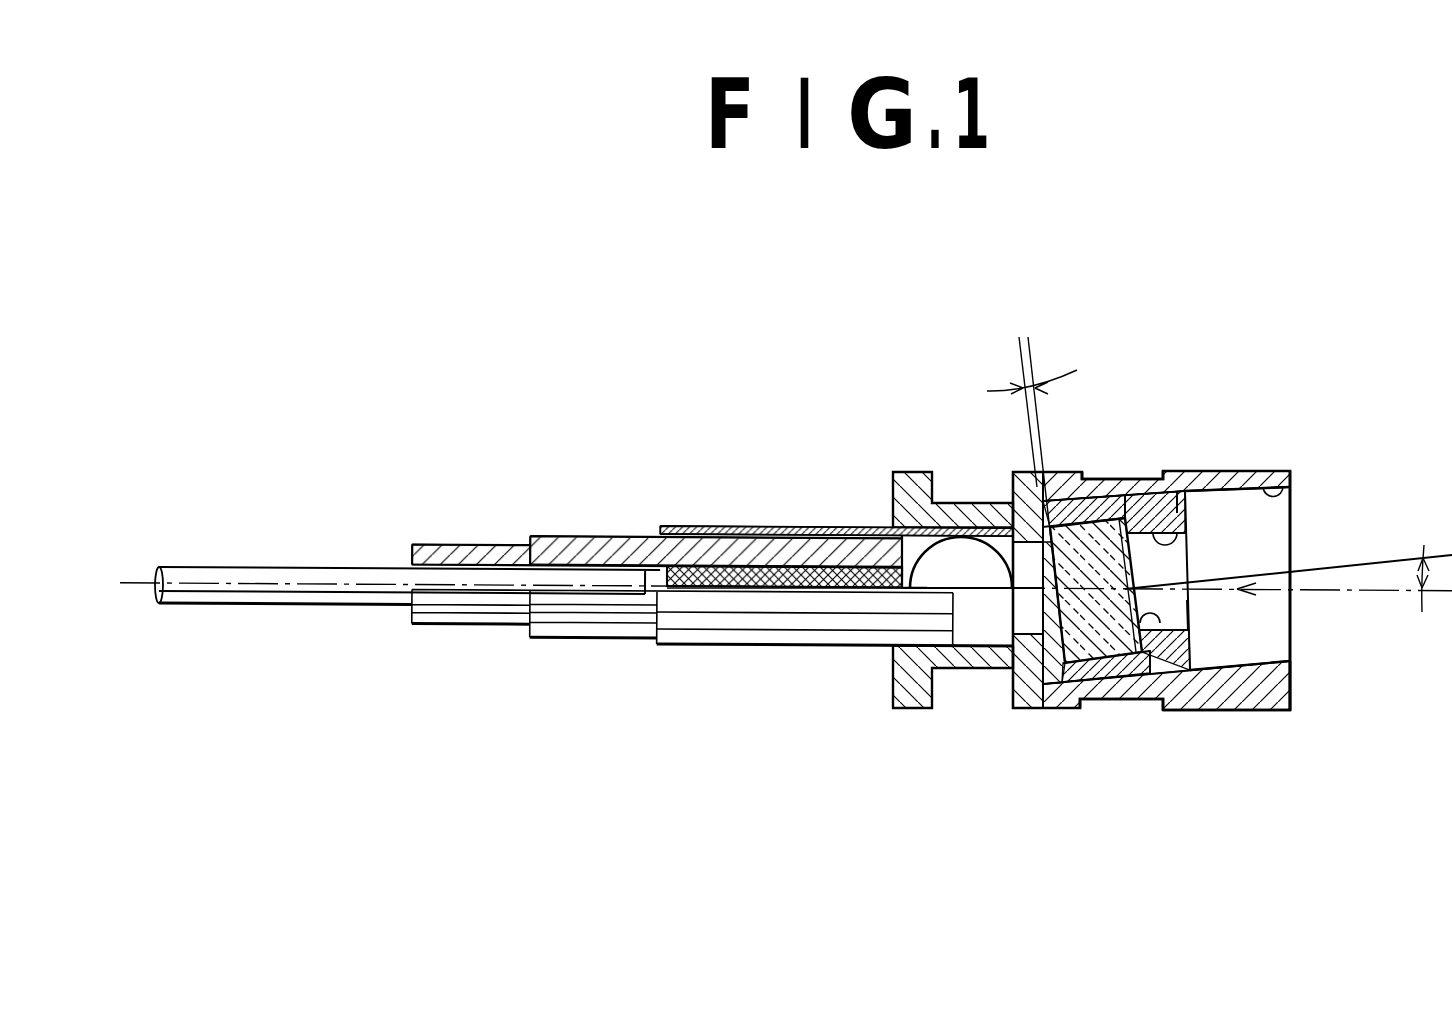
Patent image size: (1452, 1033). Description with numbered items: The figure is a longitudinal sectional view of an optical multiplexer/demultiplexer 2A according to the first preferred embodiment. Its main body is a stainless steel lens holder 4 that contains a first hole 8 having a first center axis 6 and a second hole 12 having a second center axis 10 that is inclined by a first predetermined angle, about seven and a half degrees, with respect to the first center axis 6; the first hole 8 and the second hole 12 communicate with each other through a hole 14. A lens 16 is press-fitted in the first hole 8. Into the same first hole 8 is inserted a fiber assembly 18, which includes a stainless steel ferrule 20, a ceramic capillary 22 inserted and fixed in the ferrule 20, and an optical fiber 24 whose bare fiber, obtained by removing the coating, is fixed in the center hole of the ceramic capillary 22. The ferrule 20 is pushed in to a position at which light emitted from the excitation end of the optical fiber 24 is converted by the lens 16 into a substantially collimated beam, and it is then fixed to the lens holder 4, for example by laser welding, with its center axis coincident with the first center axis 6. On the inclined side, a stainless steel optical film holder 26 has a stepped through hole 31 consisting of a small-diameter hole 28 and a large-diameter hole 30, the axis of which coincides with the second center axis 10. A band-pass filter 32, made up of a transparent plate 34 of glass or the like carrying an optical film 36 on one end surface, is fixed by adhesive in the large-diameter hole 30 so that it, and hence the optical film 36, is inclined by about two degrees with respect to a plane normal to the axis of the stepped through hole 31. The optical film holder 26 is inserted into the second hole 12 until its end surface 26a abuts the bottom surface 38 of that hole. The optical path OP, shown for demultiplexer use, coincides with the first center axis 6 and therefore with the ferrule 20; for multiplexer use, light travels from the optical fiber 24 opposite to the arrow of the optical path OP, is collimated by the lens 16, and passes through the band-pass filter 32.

The optical multiplexer/demultiplexer 2A is at (1103, 468).
The lens holder 4 is at (1012, 707).
The first center axis 6 is at (957, 590).
The first hole 8 is at (878, 536).
The second center axis 10 is at (1348, 567).
The second hole 12 is at (1290, 490).
The hole 14 is at (1021, 603).
The lens 16 is at (955, 552).
The fiber assembly 18 is at (545, 645).
The ferrule 20 is at (546, 538).
The ceramic capillary 22 is at (780, 580).
The optical fiber 24 is at (247, 568).
The optical film holder 26 is at (1124, 518).
The end surface 26a is at (1038, 665).
The small-diameter hole 28 is at (1180, 542).
The large-diameter hole 30 is at (1122, 672).
The stepped through hole 31 is at (1290, 710).
The band-pass filter 32 is at (1118, 500).
The transparent plate 34 is at (1098, 683).
The optical film 36 is at (1197, 613).
The bottom surface 38 is at (1053, 668).
The optical path OP is at (1370, 593).